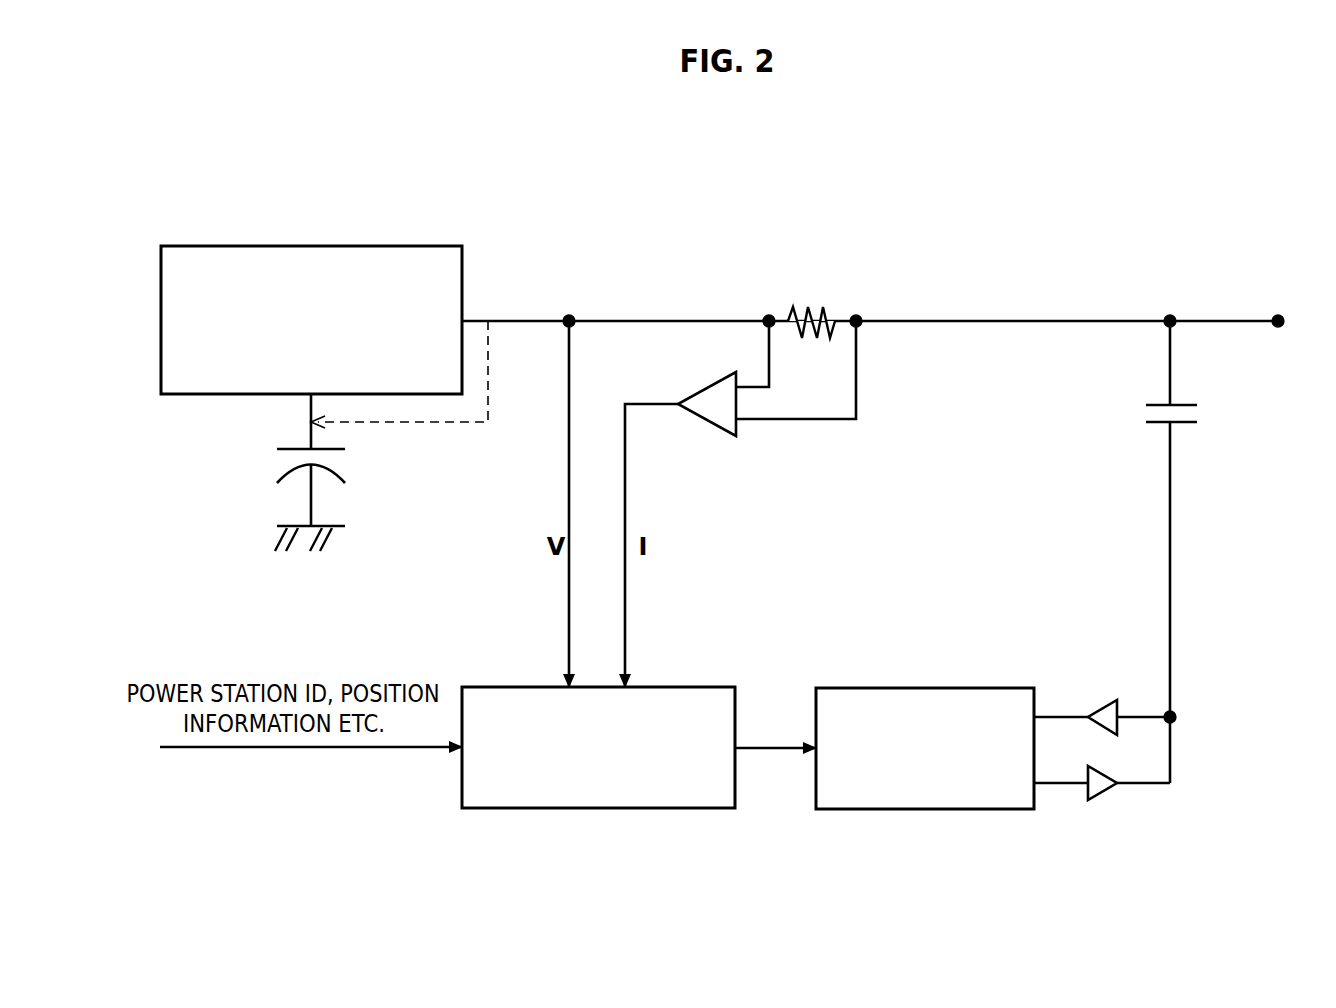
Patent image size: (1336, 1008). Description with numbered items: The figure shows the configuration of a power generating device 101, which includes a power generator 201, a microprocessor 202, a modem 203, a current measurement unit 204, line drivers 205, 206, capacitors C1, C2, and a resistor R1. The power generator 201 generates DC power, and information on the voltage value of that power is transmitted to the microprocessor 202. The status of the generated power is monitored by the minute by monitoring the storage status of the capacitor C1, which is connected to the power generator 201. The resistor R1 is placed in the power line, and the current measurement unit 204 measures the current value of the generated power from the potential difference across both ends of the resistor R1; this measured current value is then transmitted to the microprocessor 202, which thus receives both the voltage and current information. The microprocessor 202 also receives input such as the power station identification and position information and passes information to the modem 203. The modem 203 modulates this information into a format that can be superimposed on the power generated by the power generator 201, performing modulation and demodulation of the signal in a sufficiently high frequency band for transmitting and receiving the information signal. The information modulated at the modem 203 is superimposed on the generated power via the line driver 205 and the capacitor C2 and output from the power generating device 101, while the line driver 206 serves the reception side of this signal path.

The power generating device 101 is at (1080, 166).
The power generator 201 is at (310, 246).
The microprocessor 202 is at (600, 810).
The modem 203 is at (927, 811).
The current measurement unit 204 is at (712, 421).
The line driver 205 is at (1101, 796).
The line driver 206 is at (1097, 706).
The capacitor C1 is at (291, 472).
The capacitor C2 is at (1153, 552).
The resistor R1 is at (811, 305).